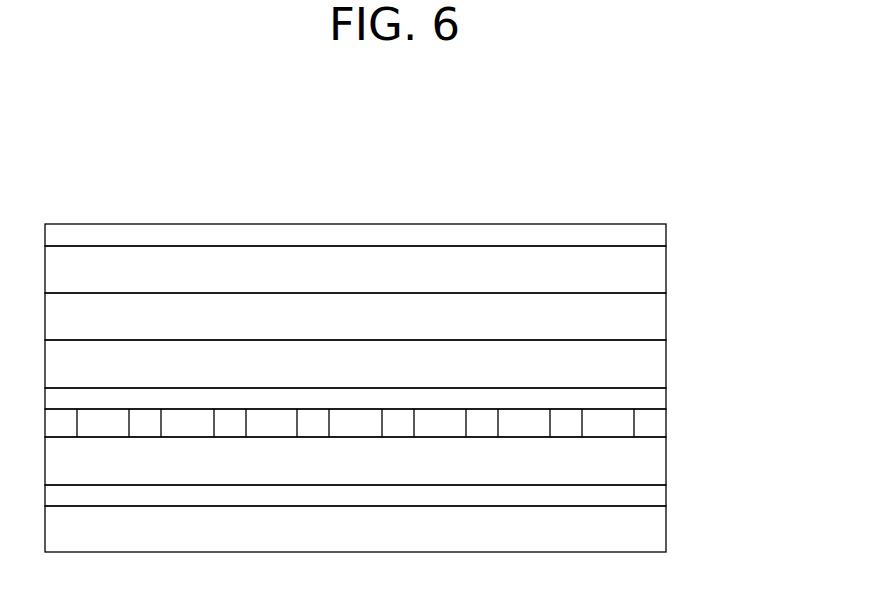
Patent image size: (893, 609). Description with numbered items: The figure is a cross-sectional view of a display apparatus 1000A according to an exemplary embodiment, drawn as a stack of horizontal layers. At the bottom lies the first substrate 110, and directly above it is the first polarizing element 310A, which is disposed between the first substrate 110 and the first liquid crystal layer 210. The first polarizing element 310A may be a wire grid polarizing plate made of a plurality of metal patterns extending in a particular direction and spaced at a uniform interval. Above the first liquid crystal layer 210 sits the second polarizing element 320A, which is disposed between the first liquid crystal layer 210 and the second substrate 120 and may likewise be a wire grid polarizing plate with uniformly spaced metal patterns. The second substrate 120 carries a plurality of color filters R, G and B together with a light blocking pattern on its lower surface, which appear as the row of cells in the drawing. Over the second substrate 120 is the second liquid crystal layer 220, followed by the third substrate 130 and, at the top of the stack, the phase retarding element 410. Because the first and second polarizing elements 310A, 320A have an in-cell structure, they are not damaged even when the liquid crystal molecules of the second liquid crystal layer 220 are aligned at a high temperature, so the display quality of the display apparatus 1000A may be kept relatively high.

The display apparatus 1000A is at (318, 152).
The phase retarding element 410 is at (666, 233).
The third substrate 130 is at (666, 260).
The second liquid crystal layer 220 is at (666, 317).
The second substrate 120 is at (666, 368).
The second polarizing element 320A is at (666, 398).
The first liquid crystal layer 210 is at (666, 457).
The first polarizing element 310A is at (666, 489).
The first substrate 110 is at (666, 535).